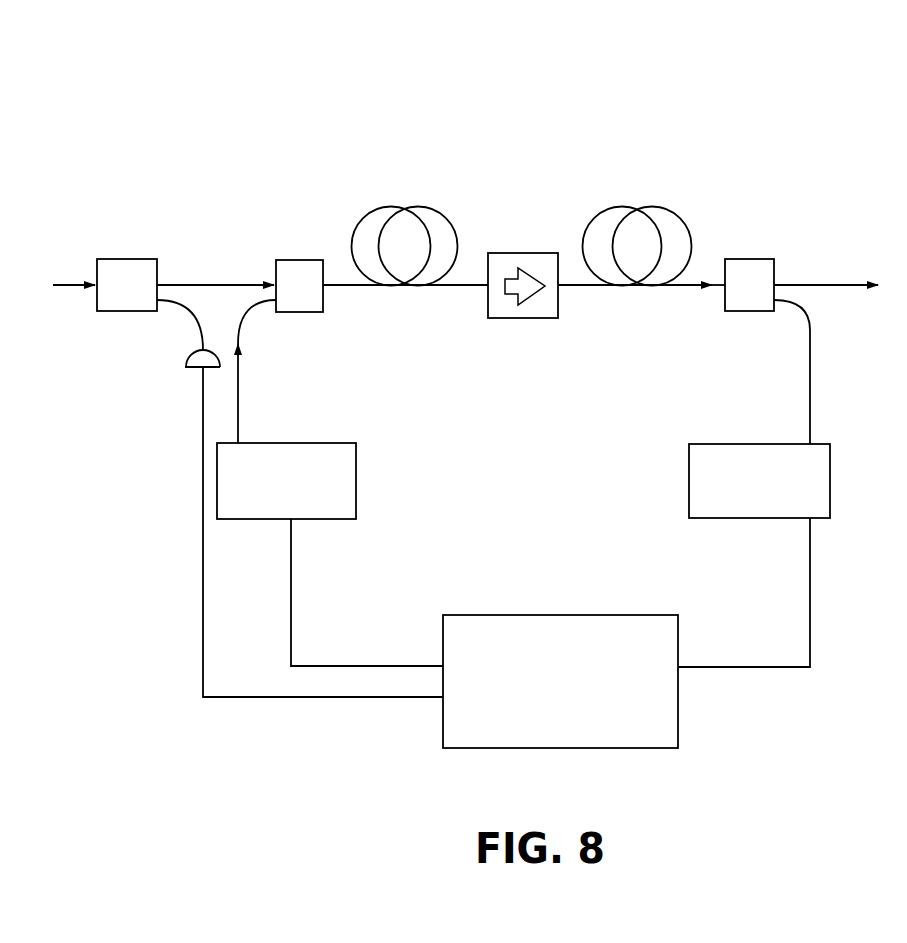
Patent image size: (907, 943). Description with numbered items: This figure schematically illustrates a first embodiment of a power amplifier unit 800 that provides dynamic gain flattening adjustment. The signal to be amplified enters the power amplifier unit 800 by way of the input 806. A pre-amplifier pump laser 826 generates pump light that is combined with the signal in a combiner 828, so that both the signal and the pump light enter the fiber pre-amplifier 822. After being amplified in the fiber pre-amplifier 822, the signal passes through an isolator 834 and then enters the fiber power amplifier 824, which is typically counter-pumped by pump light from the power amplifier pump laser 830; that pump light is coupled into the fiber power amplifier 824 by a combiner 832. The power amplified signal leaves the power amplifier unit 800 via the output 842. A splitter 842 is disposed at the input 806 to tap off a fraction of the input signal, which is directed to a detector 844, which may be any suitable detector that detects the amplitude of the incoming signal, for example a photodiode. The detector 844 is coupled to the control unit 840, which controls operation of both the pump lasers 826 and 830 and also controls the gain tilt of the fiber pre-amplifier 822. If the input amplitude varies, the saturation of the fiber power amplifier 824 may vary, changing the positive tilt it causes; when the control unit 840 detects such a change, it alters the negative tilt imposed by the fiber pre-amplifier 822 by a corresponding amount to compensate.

The power amplifier unit 800 is at (650, 75).
The input 806 is at (66, 285).
The splitter 842 is at (125, 311).
The detector 844 is at (185, 360).
The combiner 828 is at (290, 260).
The fiber pre-amplifier 822 is at (388, 207).
The isolator 834 is at (523, 253).
The fiber power amplifier 824 is at (622, 207).
The combiner 832 is at (760, 259).
The pre-amplifier pump laser 826 is at (323, 443).
The power amplifier pump laser 830 is at (723, 444).
The control unit 840 is at (562, 615).